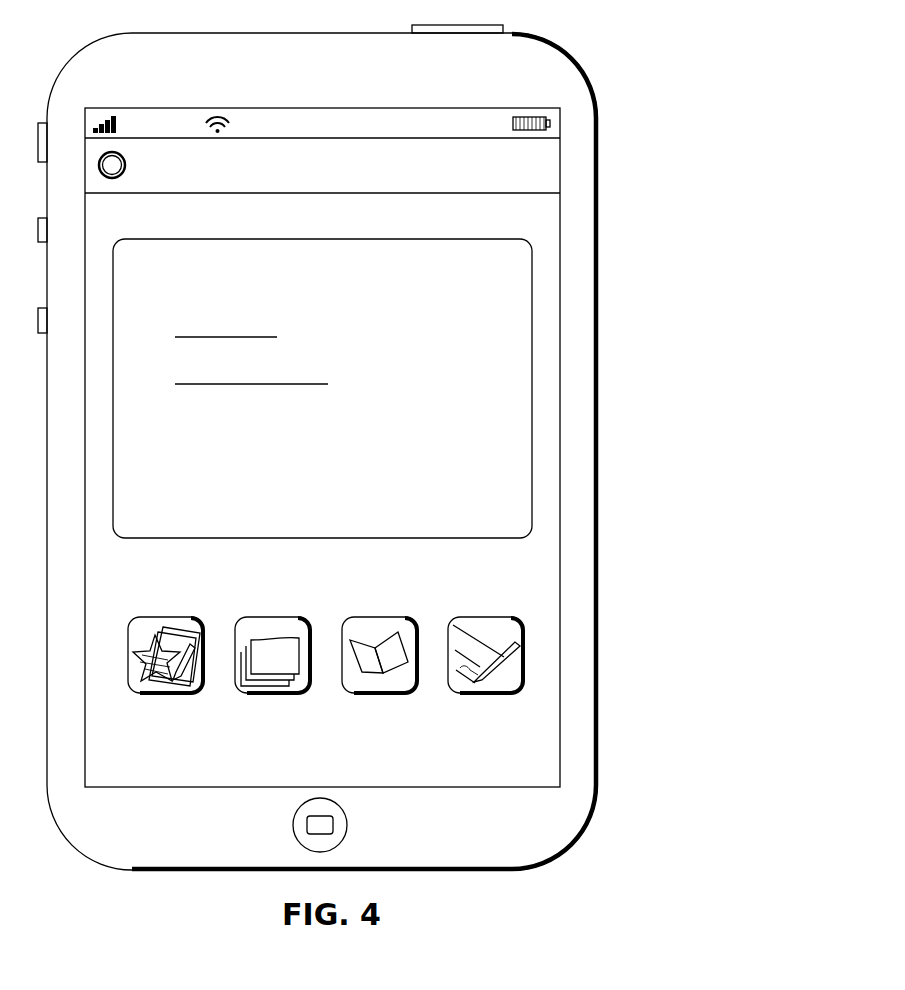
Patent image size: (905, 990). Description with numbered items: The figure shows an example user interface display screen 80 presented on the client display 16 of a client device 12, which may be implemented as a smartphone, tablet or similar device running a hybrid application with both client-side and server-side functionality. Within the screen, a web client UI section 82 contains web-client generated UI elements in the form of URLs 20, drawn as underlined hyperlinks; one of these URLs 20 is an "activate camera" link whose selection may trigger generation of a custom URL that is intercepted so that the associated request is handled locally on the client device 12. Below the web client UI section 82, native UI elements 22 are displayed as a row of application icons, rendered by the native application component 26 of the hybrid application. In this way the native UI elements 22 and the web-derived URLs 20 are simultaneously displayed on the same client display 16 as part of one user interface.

The client device 12 is at (536, 36).
The client display 16 is at (299, 99).
The user interface display screen 80 is at (450, 133).
The native application component 26 is at (126, 170).
The web client UI section 82 is at (385, 233).
The URLs 20 is at (368, 308).
The native UI elements 22 is at (449, 580).